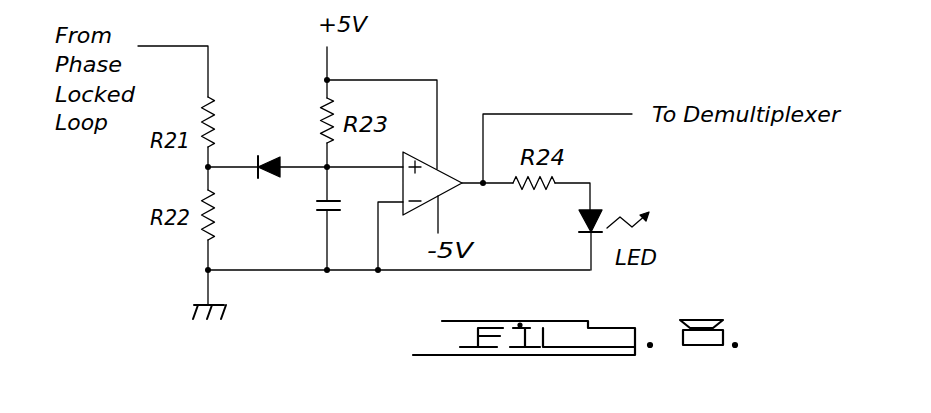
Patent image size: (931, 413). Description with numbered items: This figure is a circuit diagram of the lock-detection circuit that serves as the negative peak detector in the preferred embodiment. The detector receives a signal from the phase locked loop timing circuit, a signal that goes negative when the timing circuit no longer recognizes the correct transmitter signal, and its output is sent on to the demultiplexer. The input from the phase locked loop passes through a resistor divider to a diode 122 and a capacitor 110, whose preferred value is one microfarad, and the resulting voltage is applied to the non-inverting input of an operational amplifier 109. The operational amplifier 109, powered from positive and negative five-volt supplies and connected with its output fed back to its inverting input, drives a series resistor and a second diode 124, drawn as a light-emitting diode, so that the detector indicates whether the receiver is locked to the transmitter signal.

The operational amplifier 109 is at (447, 190).
The capacitor 110 is at (320, 212).
The diode 122 is at (258, 157).
The diode 124 is at (598, 212).